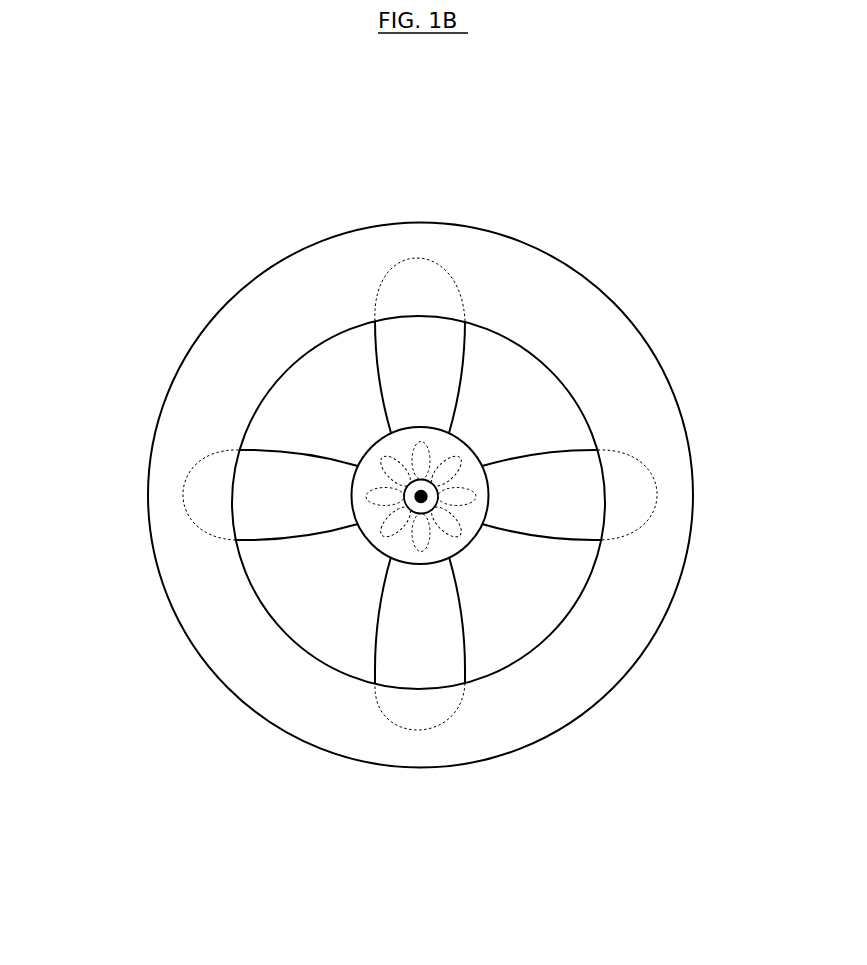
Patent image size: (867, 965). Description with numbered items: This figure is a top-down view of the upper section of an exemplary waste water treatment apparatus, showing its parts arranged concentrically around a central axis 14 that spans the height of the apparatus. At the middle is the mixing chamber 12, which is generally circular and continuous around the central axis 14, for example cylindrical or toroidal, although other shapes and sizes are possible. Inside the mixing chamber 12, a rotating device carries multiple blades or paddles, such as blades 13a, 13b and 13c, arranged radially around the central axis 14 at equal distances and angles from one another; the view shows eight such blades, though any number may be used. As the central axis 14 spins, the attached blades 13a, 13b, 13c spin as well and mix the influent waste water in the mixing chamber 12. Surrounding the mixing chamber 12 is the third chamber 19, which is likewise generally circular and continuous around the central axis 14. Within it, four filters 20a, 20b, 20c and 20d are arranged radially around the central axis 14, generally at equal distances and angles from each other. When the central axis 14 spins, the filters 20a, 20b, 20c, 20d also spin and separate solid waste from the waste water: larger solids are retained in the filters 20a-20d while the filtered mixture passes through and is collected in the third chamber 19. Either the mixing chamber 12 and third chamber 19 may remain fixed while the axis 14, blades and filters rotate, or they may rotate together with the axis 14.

The mixing chamber 12 is at (470, 448).
The blade 13a is at (404, 504).
The blade 13b is at (436, 502).
The blade 13c is at (392, 460).
The central axis 14 is at (436, 500).
The third chamber 19 is at (165, 397).
The filter 20a is at (417, 258).
The filter 20b is at (657, 492).
The filter 20c is at (418, 730).
The filter 20d is at (185, 493).